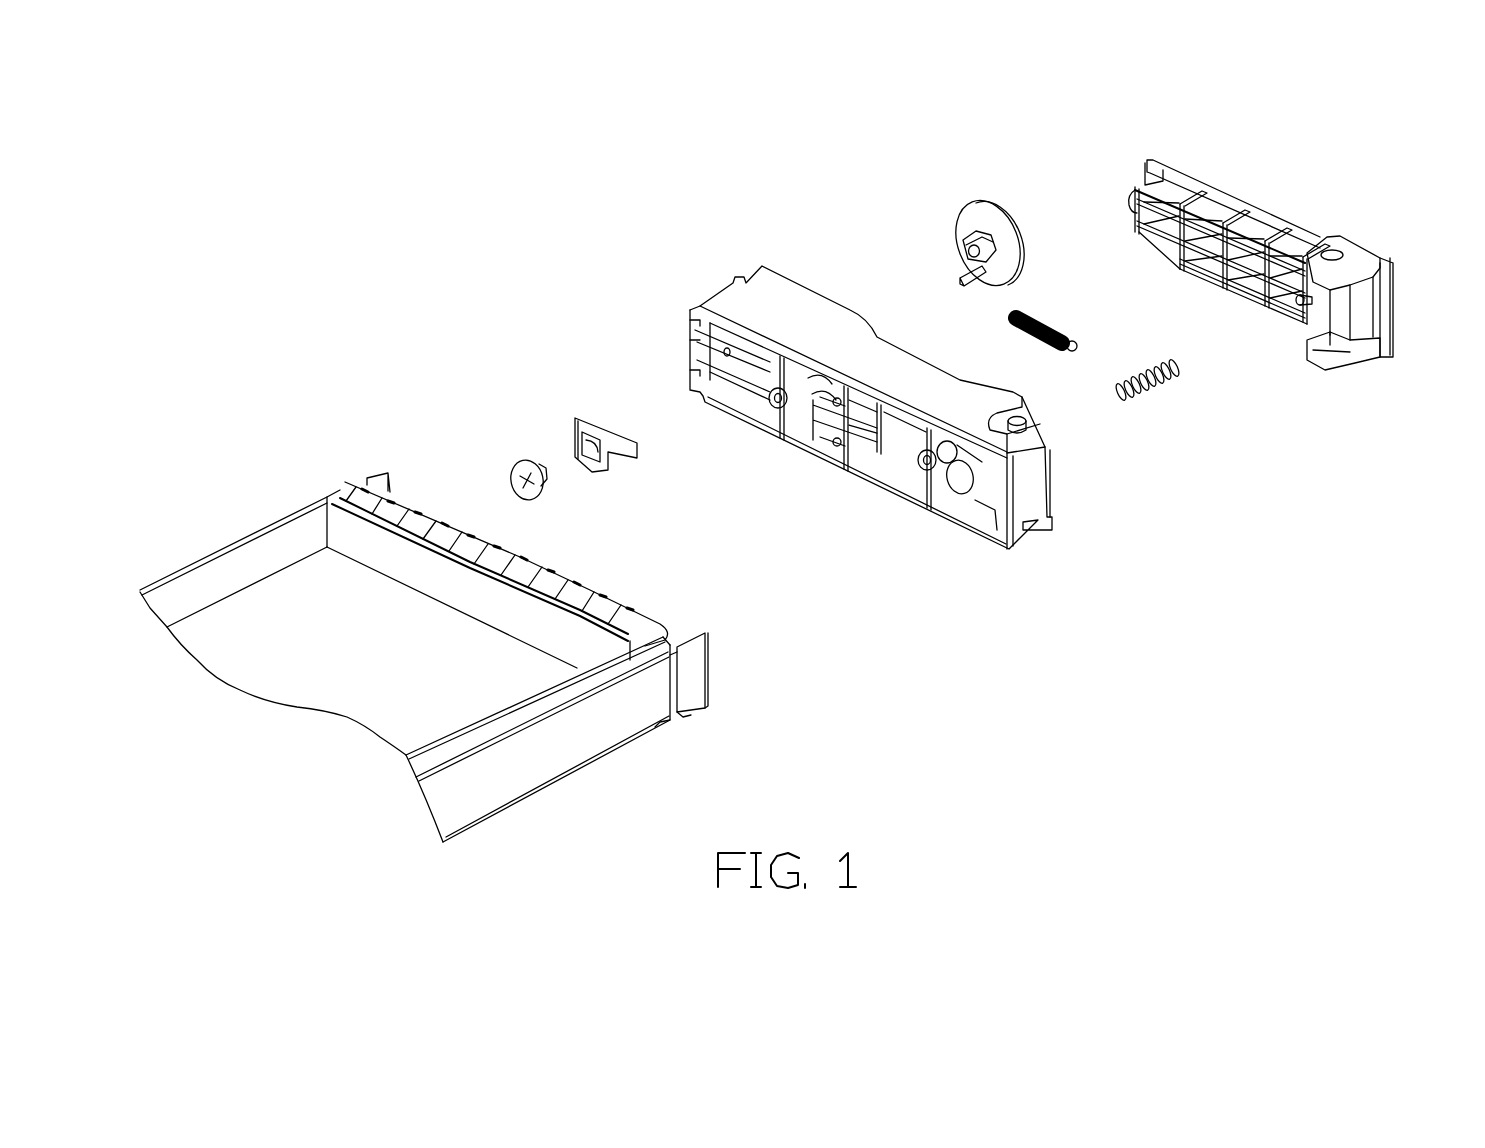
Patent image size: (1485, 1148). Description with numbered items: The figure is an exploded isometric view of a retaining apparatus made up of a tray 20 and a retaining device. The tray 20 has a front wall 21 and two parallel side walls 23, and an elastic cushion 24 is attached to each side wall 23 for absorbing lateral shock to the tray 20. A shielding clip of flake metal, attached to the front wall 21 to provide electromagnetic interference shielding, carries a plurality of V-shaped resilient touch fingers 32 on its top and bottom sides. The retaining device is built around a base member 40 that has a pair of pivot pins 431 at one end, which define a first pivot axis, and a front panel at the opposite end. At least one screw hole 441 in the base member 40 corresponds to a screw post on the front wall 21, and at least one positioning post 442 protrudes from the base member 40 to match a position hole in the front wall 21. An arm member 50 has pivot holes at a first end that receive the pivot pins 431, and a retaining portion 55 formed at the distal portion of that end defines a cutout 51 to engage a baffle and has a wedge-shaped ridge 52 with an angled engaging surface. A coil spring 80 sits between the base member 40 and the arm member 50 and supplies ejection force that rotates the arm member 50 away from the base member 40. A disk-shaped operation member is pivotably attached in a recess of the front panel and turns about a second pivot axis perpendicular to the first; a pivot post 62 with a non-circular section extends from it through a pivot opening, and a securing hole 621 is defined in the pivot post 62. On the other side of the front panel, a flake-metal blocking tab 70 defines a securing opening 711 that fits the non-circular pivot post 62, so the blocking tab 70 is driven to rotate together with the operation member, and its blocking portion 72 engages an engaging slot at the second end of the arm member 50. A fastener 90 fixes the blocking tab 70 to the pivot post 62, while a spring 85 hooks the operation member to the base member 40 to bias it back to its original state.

The tray 20 is at (288, 736).
The front wall 21 is at (353, 538).
The side wall 23 is at (495, 723).
The elastic cushion 24 is at (590, 737).
The V-shaped resilient touch fingers 32 is at (353, 492).
The base member 40 is at (712, 279).
The screw hole 441 is at (770, 400).
The positioning post 442 is at (838, 443).
The pivot pins 431 is at (1030, 413).
The arm member 50 is at (1211, 163).
The cutout 51 is at (1393, 272).
The wedge-shaped ridge 52 is at (1373, 357).
The retaining portion 55 is at (1353, 258).
The pivot post 62 is at (977, 233).
The securing hole 621 is at (970, 251).
The blocking tab 70 is at (574, 395).
The securing opening 711 is at (587, 447).
The blocking portion 72 is at (627, 443).
The coil spring 80 is at (1157, 393).
The spring 85 is at (1043, 327).
The fastener 90 is at (510, 470).